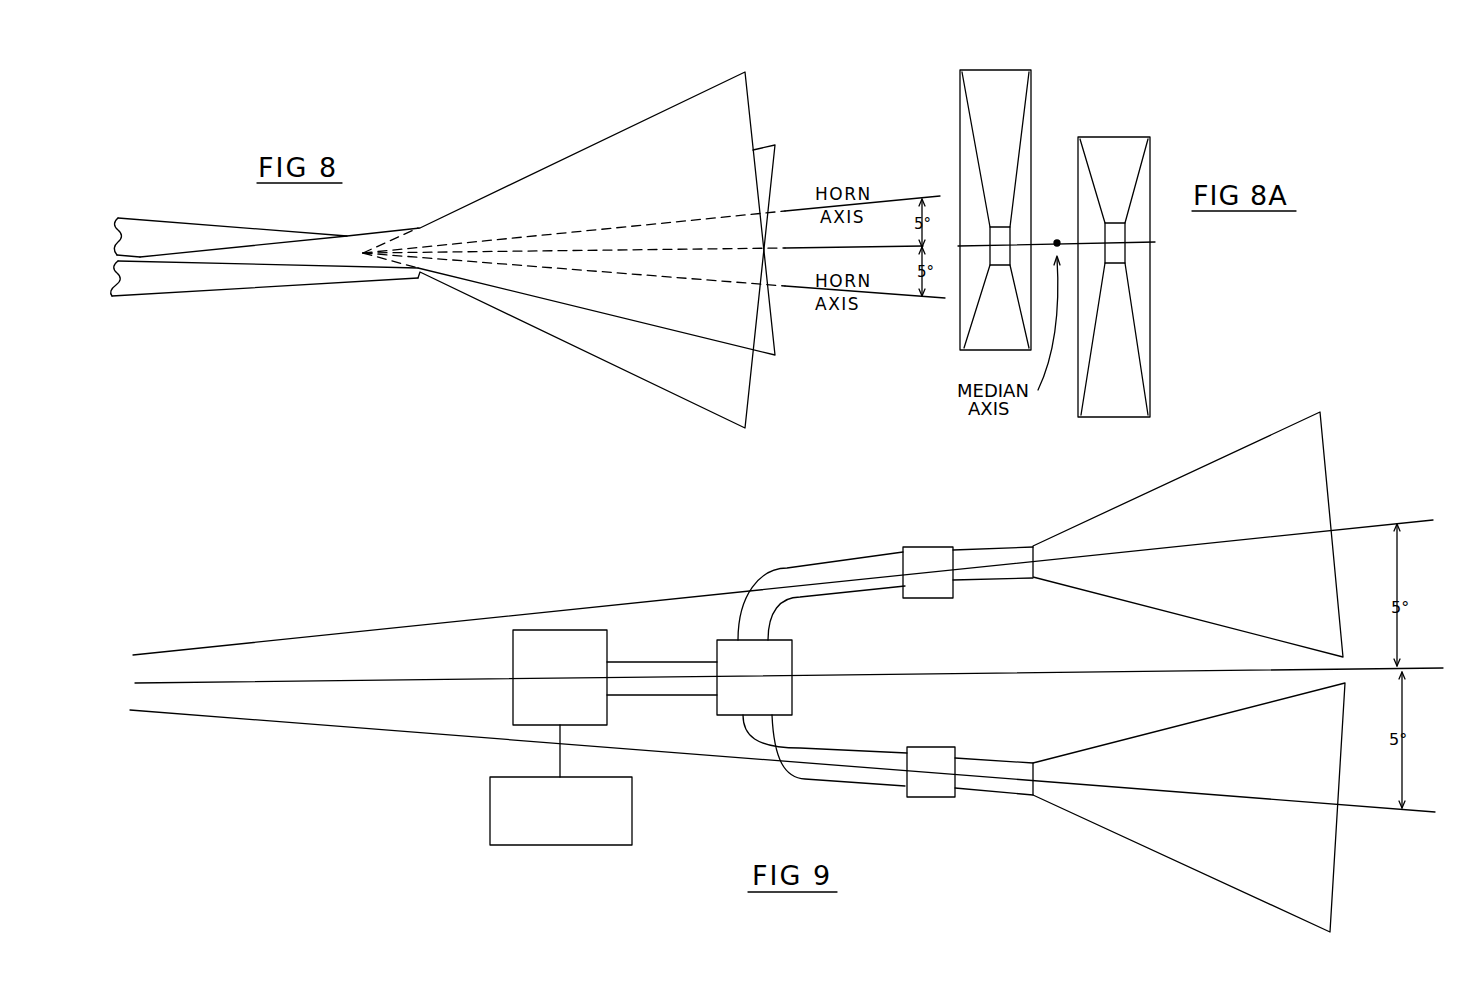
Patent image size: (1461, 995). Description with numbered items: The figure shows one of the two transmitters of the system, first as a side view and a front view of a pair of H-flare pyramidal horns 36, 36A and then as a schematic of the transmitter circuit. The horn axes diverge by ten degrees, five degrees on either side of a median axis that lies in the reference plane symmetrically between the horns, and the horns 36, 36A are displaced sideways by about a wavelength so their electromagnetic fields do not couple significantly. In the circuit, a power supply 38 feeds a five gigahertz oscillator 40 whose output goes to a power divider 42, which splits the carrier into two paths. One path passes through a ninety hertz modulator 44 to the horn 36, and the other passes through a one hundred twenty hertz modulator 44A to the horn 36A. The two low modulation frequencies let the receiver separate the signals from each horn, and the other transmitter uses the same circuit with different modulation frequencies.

In FIG. 8, the H-flare pyramidal horn 36 is at (543, 167).
In FIG. 8A, the H-flare pyramidal horn 36 is at (1012, 70).
In FIG. 9, the H-flare pyramidal horn 36 is at (1115, 507).
In FIG. 8, the H-flare pyramidal horn 36A is at (547, 335).
In FIG. 8A, the H-flare pyramidal horn 36A is at (1130, 137).
In FIG. 9, the H-flare pyramidal horn 36A is at (1130, 738).
In FIG. 9, the power supply 38 is at (522, 777).
In FIG. 9, the oscillator 40 is at (542, 630).
In FIG. 9, the power divider 42 is at (727, 640).
In FIG. 9, the modulator 44 is at (903, 595).
In FIG. 9, the modulator 44A is at (903, 785).